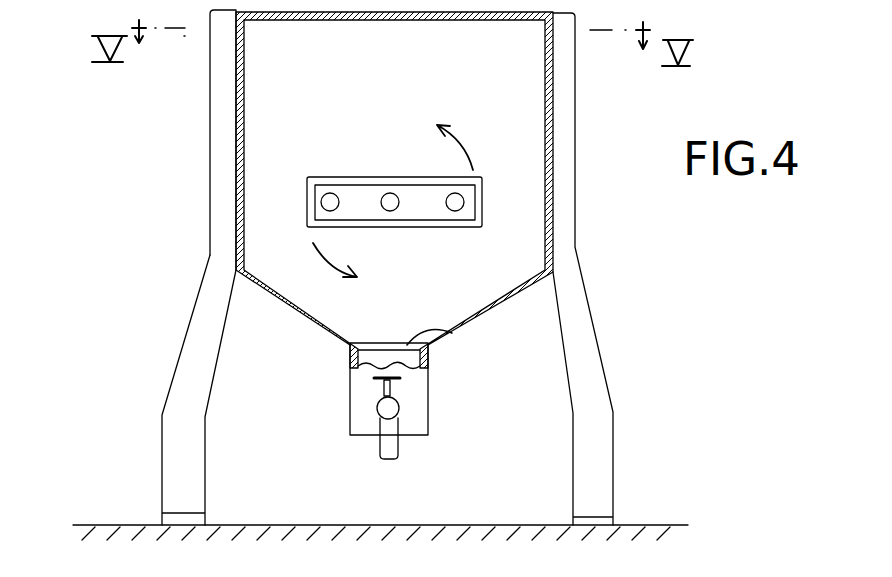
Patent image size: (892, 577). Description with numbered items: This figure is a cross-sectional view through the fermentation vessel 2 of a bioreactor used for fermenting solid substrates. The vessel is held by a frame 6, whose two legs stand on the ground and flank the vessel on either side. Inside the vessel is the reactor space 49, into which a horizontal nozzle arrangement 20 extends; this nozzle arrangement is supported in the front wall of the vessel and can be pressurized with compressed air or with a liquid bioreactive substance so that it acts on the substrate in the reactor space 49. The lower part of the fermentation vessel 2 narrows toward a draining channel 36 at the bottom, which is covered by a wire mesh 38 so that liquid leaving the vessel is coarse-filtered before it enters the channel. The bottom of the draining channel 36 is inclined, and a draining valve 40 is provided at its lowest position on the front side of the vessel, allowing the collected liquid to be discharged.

The fermentation vessel 2 is at (553, 117).
The frame 6 is at (567, 209).
The horizontal nozzle arrangement 20 is at (370, 178).
The draining channel 36 is at (428, 398).
The wire mesh 38 is at (438, 333).
The draining valve 40 is at (385, 412).
The reactor space 49 is at (420, 83).